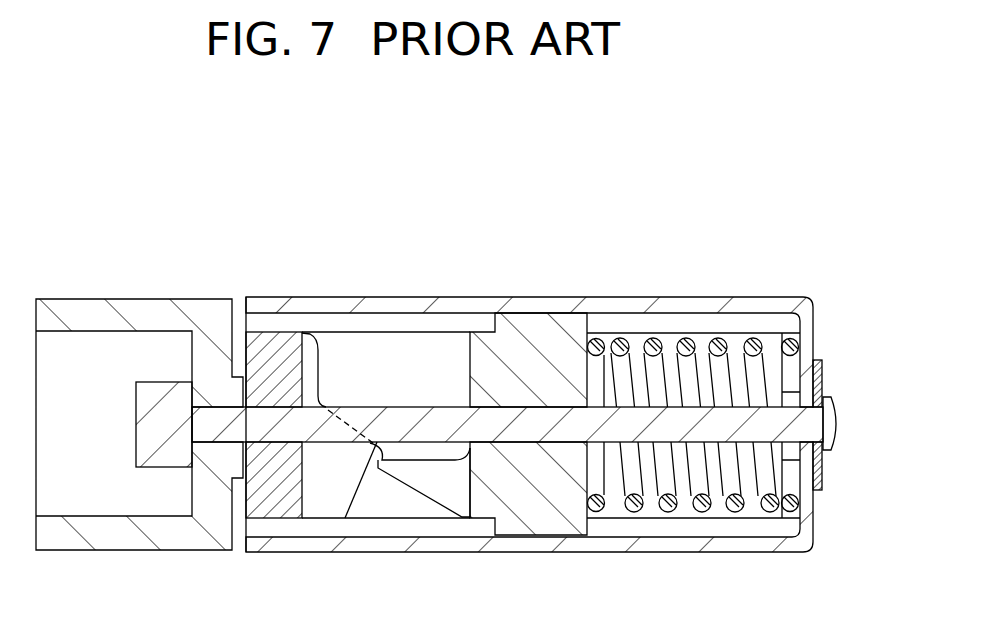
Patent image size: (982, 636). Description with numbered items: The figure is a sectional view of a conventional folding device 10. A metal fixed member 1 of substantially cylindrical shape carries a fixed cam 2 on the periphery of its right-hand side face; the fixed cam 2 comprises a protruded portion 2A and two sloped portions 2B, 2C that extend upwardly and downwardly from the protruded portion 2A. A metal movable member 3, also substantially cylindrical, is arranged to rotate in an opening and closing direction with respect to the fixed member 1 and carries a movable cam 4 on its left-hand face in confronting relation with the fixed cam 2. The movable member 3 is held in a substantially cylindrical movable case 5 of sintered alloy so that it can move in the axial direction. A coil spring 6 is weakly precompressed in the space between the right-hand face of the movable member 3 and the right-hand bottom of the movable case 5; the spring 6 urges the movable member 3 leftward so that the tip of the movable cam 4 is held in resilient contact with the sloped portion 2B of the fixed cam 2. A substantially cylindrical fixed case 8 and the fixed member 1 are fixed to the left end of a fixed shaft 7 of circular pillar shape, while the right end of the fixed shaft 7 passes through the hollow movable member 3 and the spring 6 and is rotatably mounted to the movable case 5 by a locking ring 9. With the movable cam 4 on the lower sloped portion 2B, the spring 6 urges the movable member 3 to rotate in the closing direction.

The fixed member 1 is at (263, 510).
The fixed cam 2 is at (320, 508).
The protruded portion 2A is at (379, 452).
The sloped portion 2B is at (360, 500).
The sloped portion 2C is at (340, 413).
The movable member 3 is at (548, 527).
The movable cam 4 is at (430, 488).
The movable case 5 is at (603, 304).
The coil spring 6 is at (672, 510).
The fixed shaft 7 is at (170, 390).
The fixed case 8 is at (100, 308).
The locking ring 9 is at (815, 360).
The folding device 10 is at (683, 290).